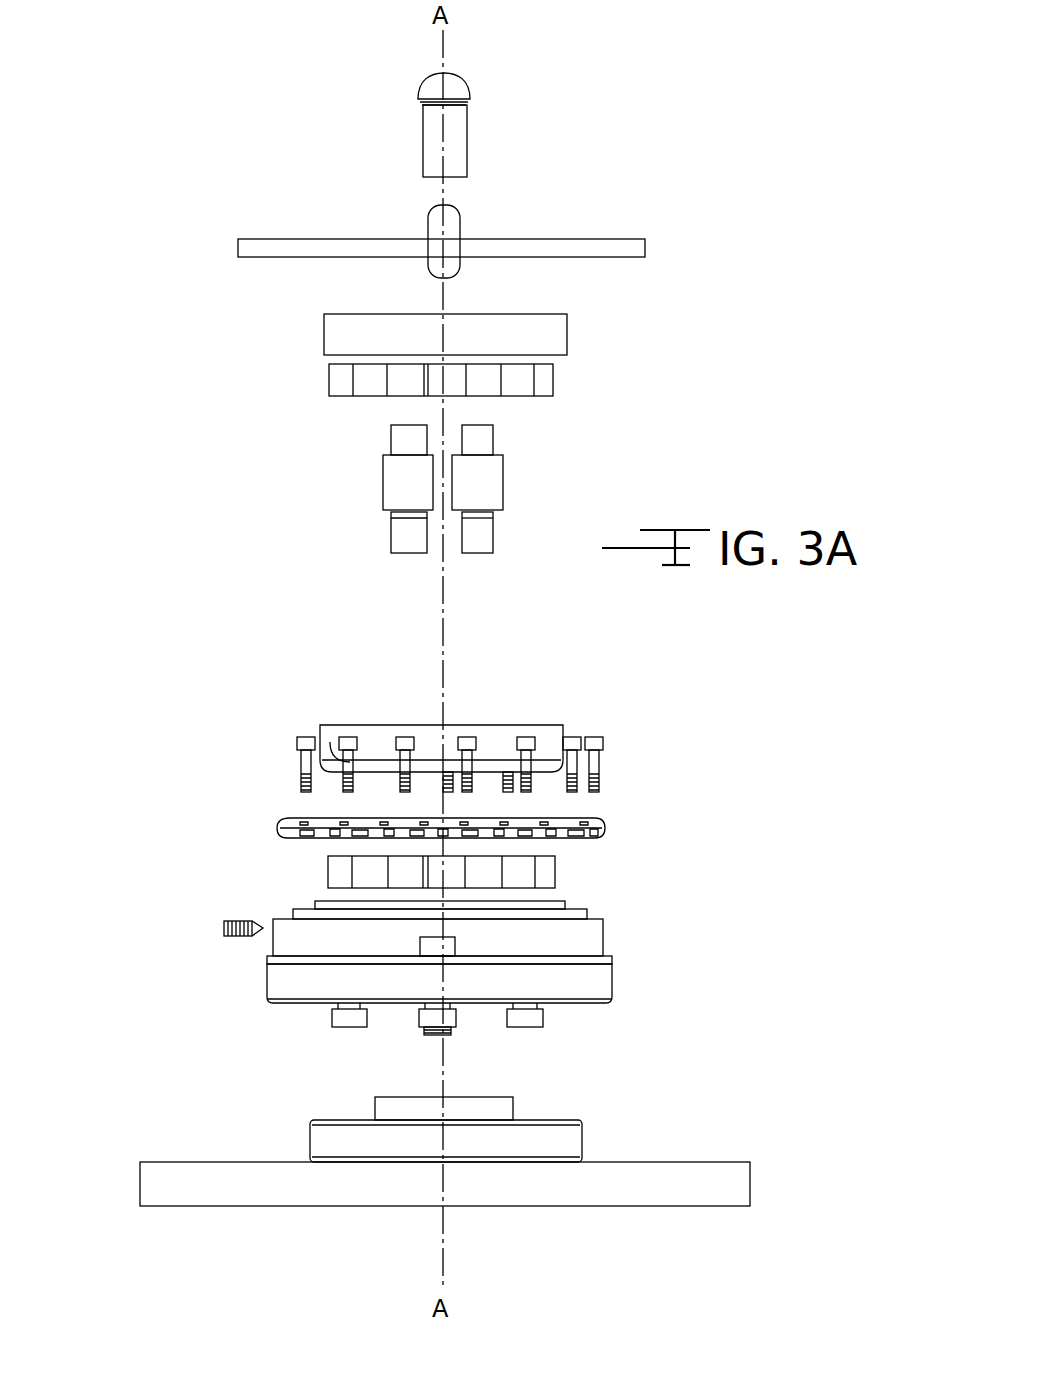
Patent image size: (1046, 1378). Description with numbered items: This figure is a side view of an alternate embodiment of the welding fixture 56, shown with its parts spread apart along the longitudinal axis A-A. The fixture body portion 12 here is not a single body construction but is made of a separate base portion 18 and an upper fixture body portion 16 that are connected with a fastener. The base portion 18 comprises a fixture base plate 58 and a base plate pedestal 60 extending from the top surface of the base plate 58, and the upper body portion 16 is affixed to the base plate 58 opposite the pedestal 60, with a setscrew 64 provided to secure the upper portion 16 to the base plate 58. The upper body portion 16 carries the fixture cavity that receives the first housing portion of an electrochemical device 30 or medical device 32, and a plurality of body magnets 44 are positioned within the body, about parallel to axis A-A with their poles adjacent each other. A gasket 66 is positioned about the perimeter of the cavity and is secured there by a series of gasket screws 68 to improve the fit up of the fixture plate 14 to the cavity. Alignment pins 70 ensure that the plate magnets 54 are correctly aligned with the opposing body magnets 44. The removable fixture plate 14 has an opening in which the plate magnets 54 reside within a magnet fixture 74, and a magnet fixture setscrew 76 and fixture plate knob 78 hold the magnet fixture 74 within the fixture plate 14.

The fixture body portion 12 is at (389, 964).
The fixture plate 14 is at (578, 247).
The upper fixture body portion 16 is at (582, 940).
The base portion 18 is at (695, 1086).
The electrochemical device 30 is at (496, 738).
The medical device 32 is at (441, 748).
The body magnets 44 is at (522, 875).
The plate magnets 54 is at (515, 380).
The welding fixture 56 is at (252, 167).
The fixture base plate 58 is at (710, 1187).
The base plate pedestal 60 is at (572, 1138).
The setscrew 64 is at (252, 926).
The gasket 66 is at (592, 830).
The gasket screws 68 is at (598, 762).
The alignment pins 70 is at (397, 478).
The magnet fixture 74 is at (542, 329).
The magnet fixture setscrew 76 is at (452, 224).
The fixture plate knob 78 is at (467, 132).